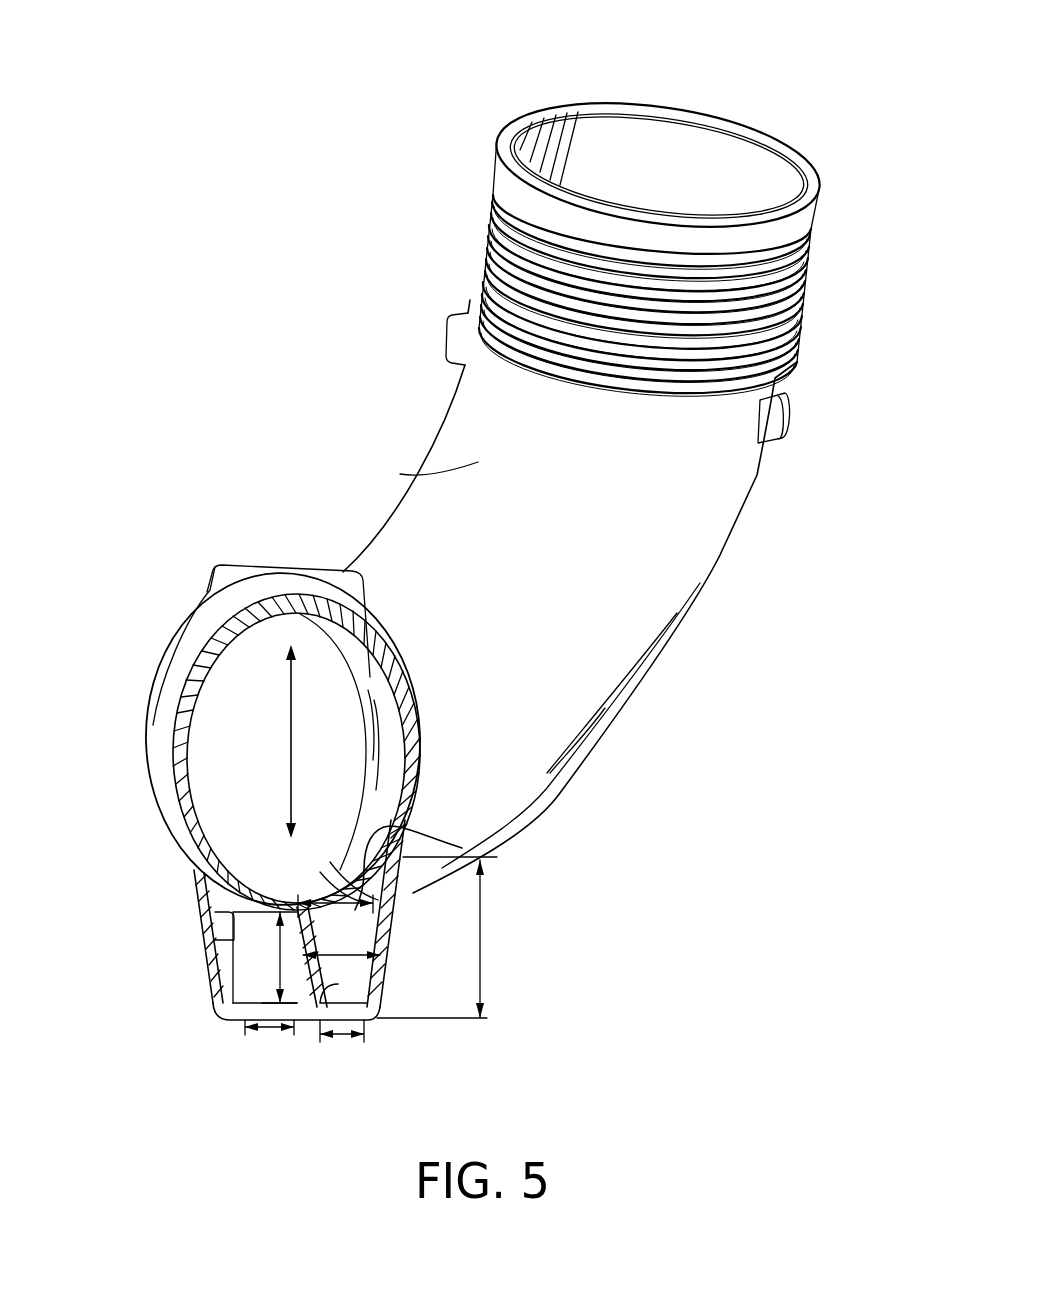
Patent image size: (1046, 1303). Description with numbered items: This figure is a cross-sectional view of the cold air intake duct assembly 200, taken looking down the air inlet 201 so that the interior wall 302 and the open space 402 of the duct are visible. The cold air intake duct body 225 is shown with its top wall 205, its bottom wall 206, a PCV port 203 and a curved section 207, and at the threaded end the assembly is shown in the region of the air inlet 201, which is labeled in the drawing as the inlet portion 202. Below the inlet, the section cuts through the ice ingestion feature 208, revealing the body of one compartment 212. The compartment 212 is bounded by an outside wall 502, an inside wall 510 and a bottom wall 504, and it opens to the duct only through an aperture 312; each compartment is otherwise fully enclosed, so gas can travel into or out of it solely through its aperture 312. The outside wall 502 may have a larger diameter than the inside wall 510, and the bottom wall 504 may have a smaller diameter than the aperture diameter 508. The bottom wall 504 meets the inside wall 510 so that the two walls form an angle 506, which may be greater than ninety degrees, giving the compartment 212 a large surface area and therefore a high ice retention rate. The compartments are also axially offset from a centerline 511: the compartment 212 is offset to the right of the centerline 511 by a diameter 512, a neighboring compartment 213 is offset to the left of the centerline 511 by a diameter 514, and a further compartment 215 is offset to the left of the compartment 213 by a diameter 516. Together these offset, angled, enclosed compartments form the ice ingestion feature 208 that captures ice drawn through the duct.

The cold air intake duct assembly 200 is at (320, 252).
The air inlet 201 is at (408, 727).
The threaded end portion 202 is at (832, 153).
The PCV port 203 is at (233, 565).
The top wall 205 is at (380, 512).
The bottom wall 206 is at (707, 548).
The curved section 207 is at (730, 582).
The ice ingestion feature 208 is at (397, 1108).
The compartment 212 is at (370, 1022).
The compartment 213 is at (247, 962).
The compartment 215 is at (213, 895).
The cold air intake duct body 225 is at (408, 474).
The interior wall 302 is at (200, 760).
The aperture 312 is at (462, 848).
The open space 402 is at (290, 742).
The outside wall 502 is at (492, 940).
The bottom wall 504 is at (340, 1040).
The angle 506 is at (311, 1037).
The aperture diameter 508 is at (340, 885).
The inside wall 510 is at (262, 1003).
The centerline 511 is at (303, 1043).
The diameter 512 is at (340, 988).
The diameter 514 is at (272, 1040).
The diameter 516 is at (220, 912).